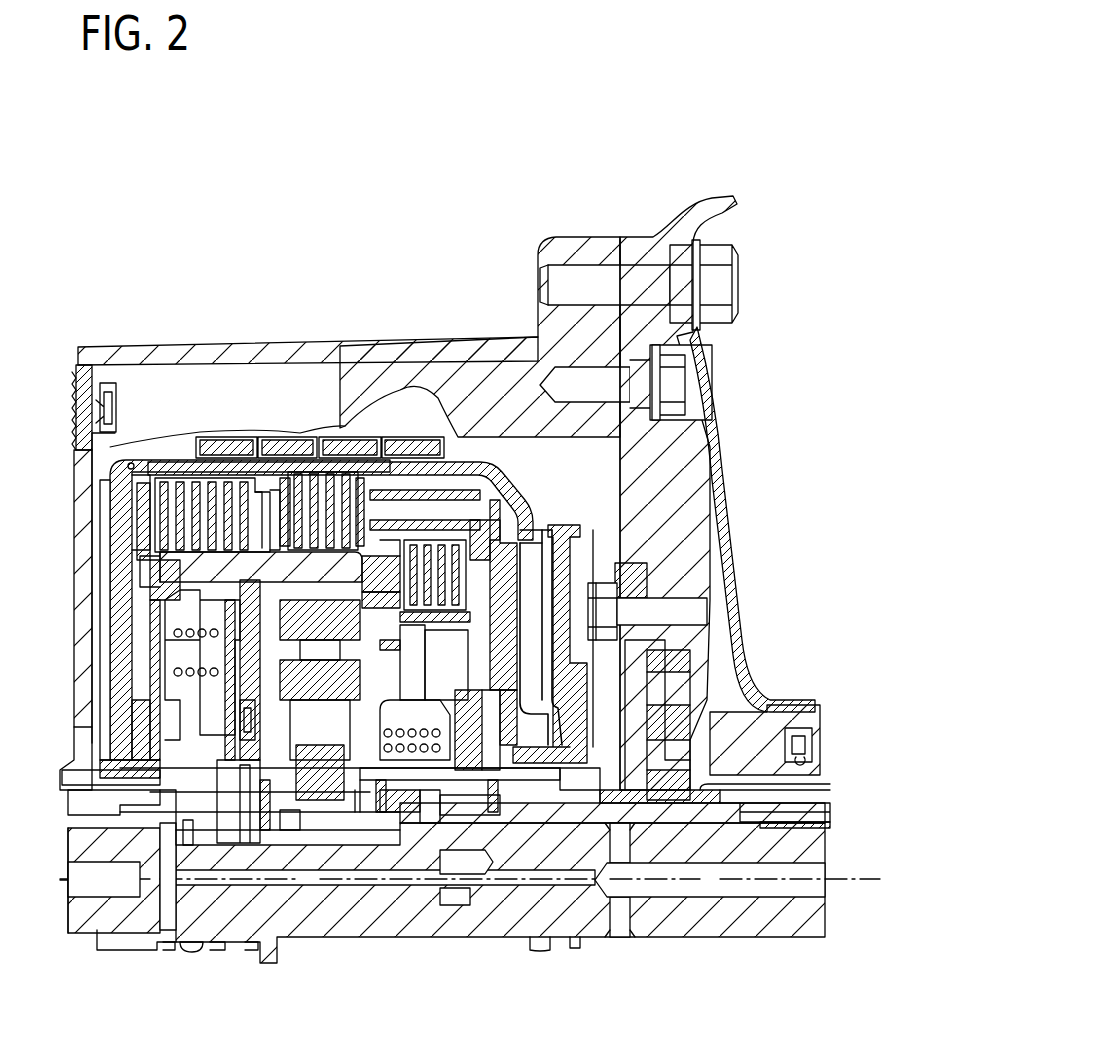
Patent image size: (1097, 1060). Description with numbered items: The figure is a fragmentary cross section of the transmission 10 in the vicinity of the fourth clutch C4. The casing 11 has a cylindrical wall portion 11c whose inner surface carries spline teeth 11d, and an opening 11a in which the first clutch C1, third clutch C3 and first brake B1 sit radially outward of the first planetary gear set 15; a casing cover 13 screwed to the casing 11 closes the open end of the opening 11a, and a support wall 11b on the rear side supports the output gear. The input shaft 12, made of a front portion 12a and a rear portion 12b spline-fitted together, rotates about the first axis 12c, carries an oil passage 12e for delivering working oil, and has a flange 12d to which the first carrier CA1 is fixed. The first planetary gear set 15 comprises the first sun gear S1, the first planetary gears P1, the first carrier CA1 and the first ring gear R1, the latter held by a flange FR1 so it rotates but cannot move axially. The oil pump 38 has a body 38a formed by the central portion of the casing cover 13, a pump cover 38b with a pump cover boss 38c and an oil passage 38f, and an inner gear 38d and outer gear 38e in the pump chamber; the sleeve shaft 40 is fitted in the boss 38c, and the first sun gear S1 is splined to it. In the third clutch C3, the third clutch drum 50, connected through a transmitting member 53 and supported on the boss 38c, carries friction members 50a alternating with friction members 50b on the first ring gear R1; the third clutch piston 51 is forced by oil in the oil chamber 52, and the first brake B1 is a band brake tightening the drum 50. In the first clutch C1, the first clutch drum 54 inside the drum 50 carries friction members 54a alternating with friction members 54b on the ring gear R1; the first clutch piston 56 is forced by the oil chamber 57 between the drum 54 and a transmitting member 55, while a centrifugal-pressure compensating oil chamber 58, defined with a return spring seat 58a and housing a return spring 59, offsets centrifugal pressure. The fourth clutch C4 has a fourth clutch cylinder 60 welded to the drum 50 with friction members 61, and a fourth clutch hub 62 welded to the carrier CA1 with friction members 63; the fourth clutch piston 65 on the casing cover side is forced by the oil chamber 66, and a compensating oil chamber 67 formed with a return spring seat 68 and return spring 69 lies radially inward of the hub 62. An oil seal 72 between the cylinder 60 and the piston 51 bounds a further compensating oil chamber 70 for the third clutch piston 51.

The transmission 10 is at (468, 190).
The casing 11 is at (204, 335).
The opening 11a is at (600, 445).
The support wall 11b is at (80, 500).
The cylindrical wall portion 11c is at (340, 348).
The spline teeth 11d is at (440, 385).
The input shaft 12 is at (836, 922).
The front portion 12a is at (685, 925).
The rear portion 12b is at (80, 915).
The first axis 12c is at (838, 880).
The flange 12d is at (268, 760).
The oil passage 12e is at (468, 865).
The casing cover 13 is at (660, 495).
The first planetary gear set 15 is at (333, 812).
The oil pump 38 is at (740, 668).
The body 38a is at (690, 640).
The pump cover 38b is at (622, 578).
The pump cover boss 38c is at (495, 795).
The inner gear 38d is at (700, 740).
The outer gear 38e is at (685, 660).
The oil passage 38f is at (380, 790).
The sleeve shaft 40 is at (812, 811).
The third clutch drum 50 is at (494, 478).
The annular friction members 50a is at (360, 498).
The annular friction members 50b is at (345, 490).
The third clutch piston 51 is at (516, 502).
The oil chamber 52 is at (562, 548).
The transmitting member 53 is at (130, 776).
The first clutch drum 54 is at (165, 470).
The annular friction members 54a is at (150, 458).
The annular friction members 54b is at (262, 550).
The transmitting member 55 is at (135, 796).
The first clutch piston 56 is at (200, 733).
The oil chamber 57 is at (170, 690).
The centrifugal-pressure compensating oil chamber 58 is at (178, 710).
The return spring seat 58a is at (215, 705).
The return spring 59 is at (182, 600).
The fourth clutch cylinder 60 is at (488, 735).
The annular friction members 61 is at (432, 655).
The fourth clutch hub 62 is at (432, 668).
The annular friction members 63 is at (374, 605).
The fourth clutch piston 65 is at (462, 745).
The oil chamber 66 is at (490, 713).
The centrifugal-pressure compensating oil chamber 67 is at (420, 770).
The return spring seat 68 is at (400, 795).
The return spring 69 is at (450, 790).
The centrifugal-pressure compensating oil chamber 70 is at (533, 677).
The oil seal 72 is at (480, 530).
The first brake B1 is at (290, 440).
The first clutch C1 is at (186, 455).
The third clutch C3 is at (318, 458).
The fourth clutch C4 is at (417, 512).
The first carrier CA1 is at (225, 660).
The flange FR1 is at (228, 738).
The first planetary gears P1 is at (305, 770).
The first ring gear R1 is at (350, 569).
The first sun gear S1 is at (320, 790).